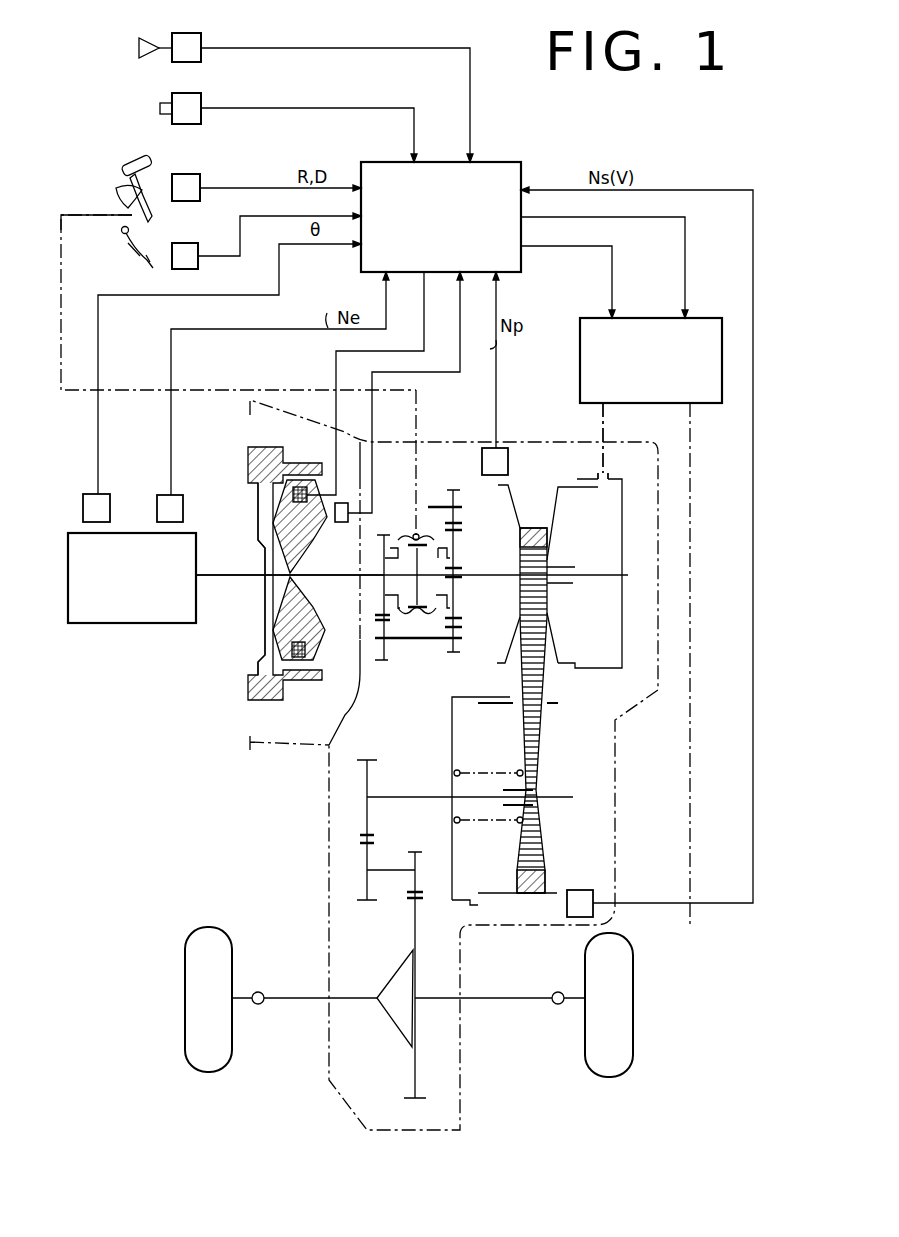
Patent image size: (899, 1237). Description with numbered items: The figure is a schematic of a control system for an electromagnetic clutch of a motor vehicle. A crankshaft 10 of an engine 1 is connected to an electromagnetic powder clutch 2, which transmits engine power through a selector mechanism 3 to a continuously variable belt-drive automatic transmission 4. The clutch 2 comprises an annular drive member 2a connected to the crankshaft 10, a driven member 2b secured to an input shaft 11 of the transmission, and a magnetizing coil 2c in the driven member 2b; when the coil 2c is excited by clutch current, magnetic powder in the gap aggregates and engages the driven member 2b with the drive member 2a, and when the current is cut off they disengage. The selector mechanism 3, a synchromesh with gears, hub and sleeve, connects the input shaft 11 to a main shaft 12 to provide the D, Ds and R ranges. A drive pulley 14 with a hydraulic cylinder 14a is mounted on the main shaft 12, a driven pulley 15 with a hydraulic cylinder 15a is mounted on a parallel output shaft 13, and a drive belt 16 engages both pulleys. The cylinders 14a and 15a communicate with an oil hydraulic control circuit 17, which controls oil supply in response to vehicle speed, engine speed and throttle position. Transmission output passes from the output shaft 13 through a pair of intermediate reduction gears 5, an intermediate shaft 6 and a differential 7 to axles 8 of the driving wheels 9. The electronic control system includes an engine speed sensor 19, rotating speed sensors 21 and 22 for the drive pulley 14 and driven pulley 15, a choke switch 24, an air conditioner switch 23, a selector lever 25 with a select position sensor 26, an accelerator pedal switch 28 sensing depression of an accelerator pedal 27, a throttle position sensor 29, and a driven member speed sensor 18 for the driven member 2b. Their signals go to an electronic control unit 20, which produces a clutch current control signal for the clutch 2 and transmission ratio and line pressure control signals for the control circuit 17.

The engine 1 is at (92, 623).
The electromagnetic powder clutch 2 is at (313, 486).
The annular drive member 2a is at (248, 465).
The driven member 2b is at (315, 540).
The magnetizing coil 2c is at (305, 484).
The selector mechanism 3 is at (400, 526).
The continuously variable belt-drive automatic transmission 4 is at (542, 492).
The intermediate reduction gears 5 is at (368, 758).
The intermediate shaft 6 is at (385, 870).
The differential 7 is at (398, 976).
The axles 8 is at (303, 995).
The vehicle driving wheels 9 is at (232, 1040).
The crankshaft 10 is at (246, 580).
The input shaft 11 is at (336, 580).
The main shaft 12 is at (497, 583).
The output shaft 13 is at (410, 795).
The drive pulley 14 is at (508, 530).
The hydraulic cylinder 14a is at (642, 543).
The driven pulley 15 is at (548, 712).
The hydraulic cylinder 15a is at (472, 722).
The drive belt 16 is at (518, 688).
The oil hydraulic control circuit 17 is at (580, 362).
The driven member speed sensor 18 is at (338, 522).
The engine speed sensor 19 is at (162, 495).
The electronic control unit 20 is at (521, 164).
The rotating speed sensor 21 is at (508, 462).
The rotating speed sensor 22 is at (584, 890).
The air conditioner switch 23 is at (201, 100).
The choke switch 24 is at (201, 38).
The selector lever 25 is at (125, 165).
The select position sensor 26 is at (200, 180).
The accelerator pedal 27 is at (123, 256).
The accelerator pedal switch 28 is at (198, 248).
The throttle position sensor 29 is at (90, 494).